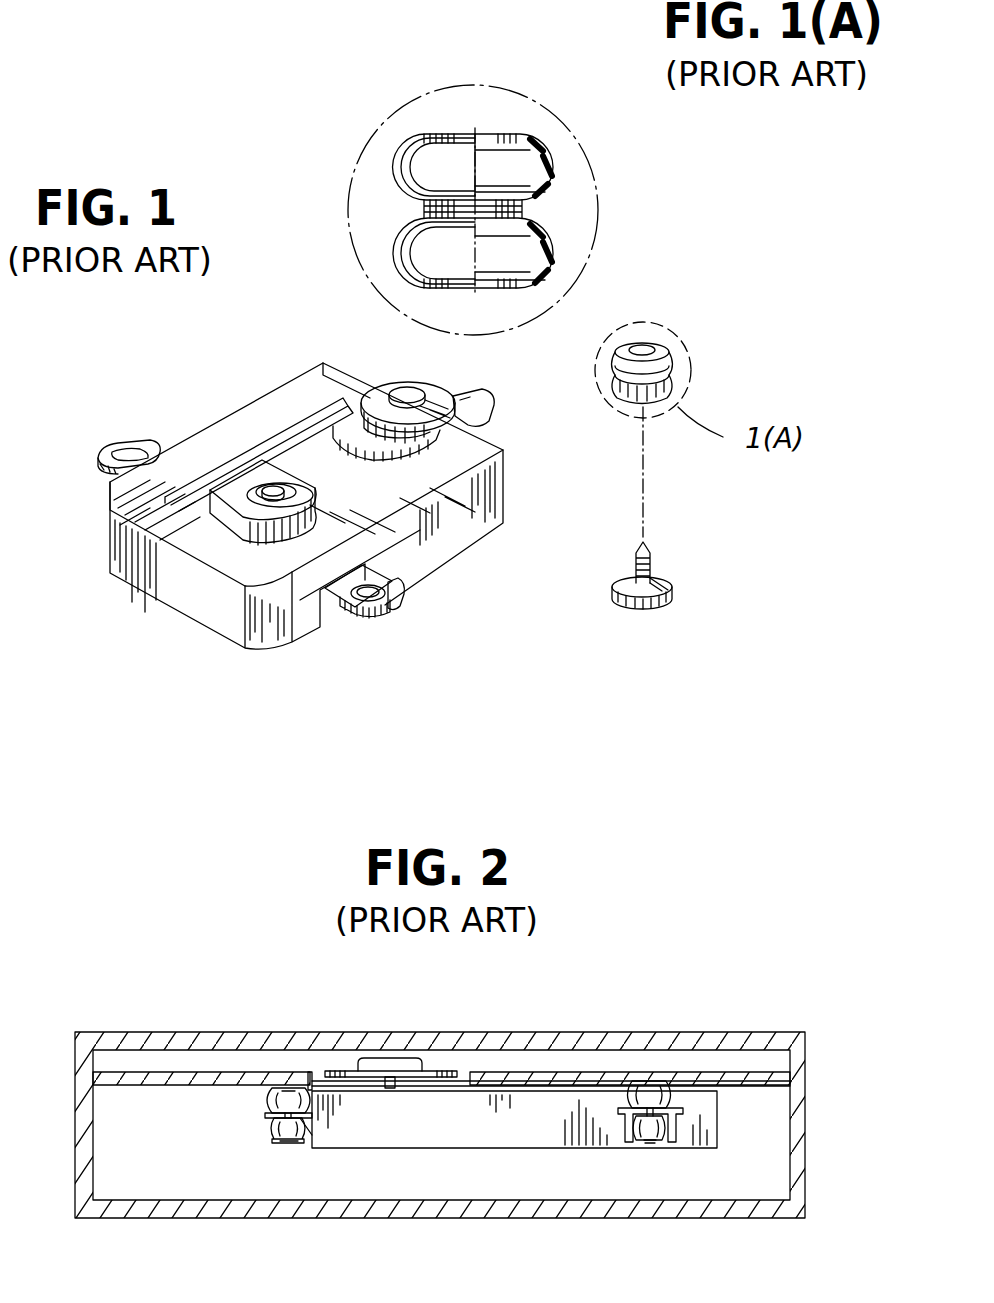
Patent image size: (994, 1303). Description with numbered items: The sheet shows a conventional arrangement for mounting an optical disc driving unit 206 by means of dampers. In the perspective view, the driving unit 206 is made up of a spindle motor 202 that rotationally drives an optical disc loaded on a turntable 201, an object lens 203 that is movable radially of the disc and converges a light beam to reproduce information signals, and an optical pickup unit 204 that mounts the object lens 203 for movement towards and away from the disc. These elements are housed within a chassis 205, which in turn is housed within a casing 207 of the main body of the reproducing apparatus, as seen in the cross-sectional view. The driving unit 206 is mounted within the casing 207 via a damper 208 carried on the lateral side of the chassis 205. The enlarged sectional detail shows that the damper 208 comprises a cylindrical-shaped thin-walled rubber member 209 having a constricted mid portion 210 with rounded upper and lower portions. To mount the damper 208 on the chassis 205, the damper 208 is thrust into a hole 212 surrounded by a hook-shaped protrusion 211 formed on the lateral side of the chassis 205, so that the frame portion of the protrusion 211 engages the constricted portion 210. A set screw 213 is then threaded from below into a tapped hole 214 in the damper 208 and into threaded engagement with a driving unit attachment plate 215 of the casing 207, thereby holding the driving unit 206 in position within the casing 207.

In FIG. 1, the turntable 201 is at (395, 388).
In FIG. 2, the turntable 201 is at (447, 1070).
In FIG. 1, the spindle motor 202 is at (462, 430).
In FIG. 1, the object lens 203 is at (270, 488).
In FIG. 1, the optical pickup unit 204 is at (237, 530).
In FIG. 1, the chassis 205 is at (458, 545).
In FIG. 1, the driving unit 206 is at (200, 405).
In FIG. 2, the driving unit 206 is at (453, 1159).
In FIG. 2, the casing 207 is at (634, 1025).
In FIG. 1, the damper 208 is at (688, 344).
In FIG. 1A, the damper 208 is at (537, 170).
In FIG. 2, the damper 208 is at (273, 1125).
In FIG. 1A, the thin-walled rubber member 209 is at (553, 162).
In FIG. 1A, the constricted mid portion 210 is at (520, 212).
In FIG. 1, the hook-shaped protrusion 211 is at (460, 391).
In FIG. 2, the hook-shaped protrusion 211 is at (265, 1115).
In FIG. 1, the hole 212 is at (482, 407).
In FIG. 1, the set screw 213 is at (672, 588).
In FIG. 2, the set screw 213 is at (300, 1143).
In FIG. 1, the tapped hole 214 is at (648, 343).
In FIG. 1A, the tapped hole 214 is at (493, 143).
In FIG. 2, the driving unit attachment plate 215 is at (520, 1072).